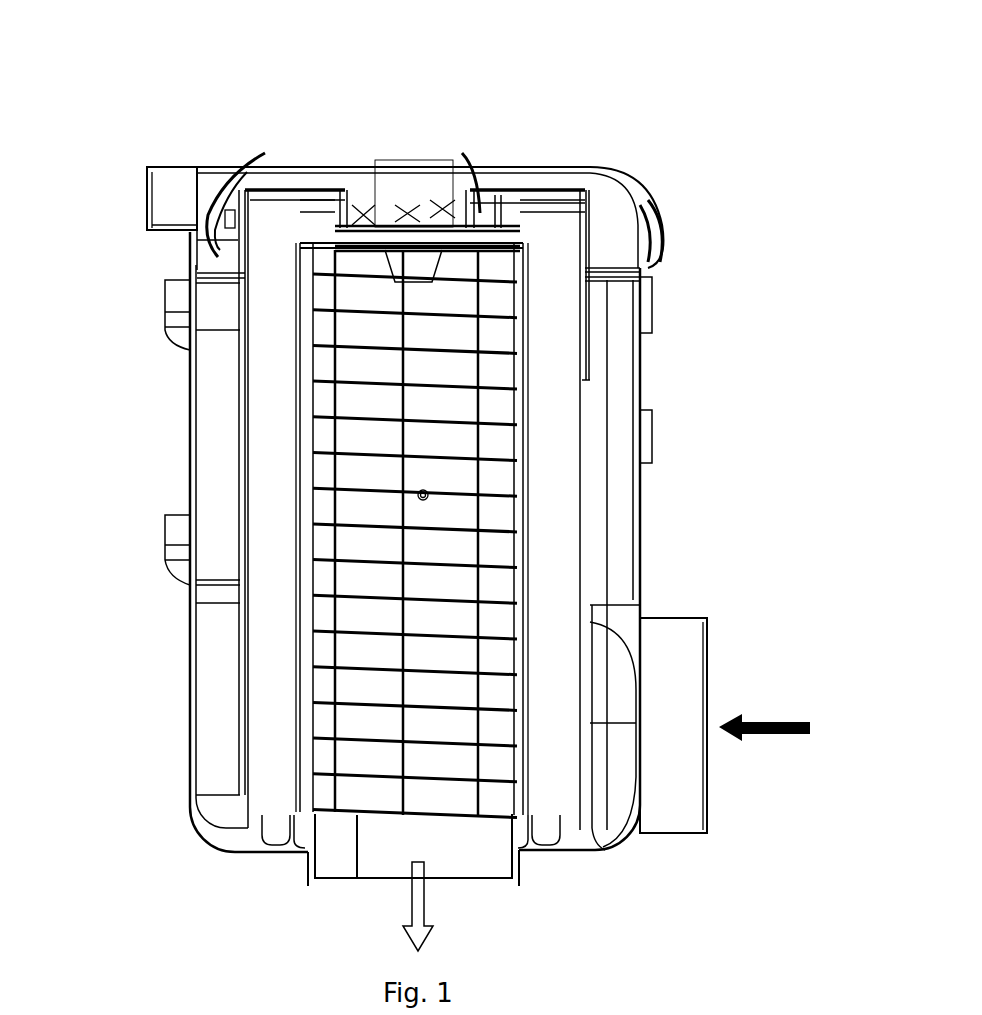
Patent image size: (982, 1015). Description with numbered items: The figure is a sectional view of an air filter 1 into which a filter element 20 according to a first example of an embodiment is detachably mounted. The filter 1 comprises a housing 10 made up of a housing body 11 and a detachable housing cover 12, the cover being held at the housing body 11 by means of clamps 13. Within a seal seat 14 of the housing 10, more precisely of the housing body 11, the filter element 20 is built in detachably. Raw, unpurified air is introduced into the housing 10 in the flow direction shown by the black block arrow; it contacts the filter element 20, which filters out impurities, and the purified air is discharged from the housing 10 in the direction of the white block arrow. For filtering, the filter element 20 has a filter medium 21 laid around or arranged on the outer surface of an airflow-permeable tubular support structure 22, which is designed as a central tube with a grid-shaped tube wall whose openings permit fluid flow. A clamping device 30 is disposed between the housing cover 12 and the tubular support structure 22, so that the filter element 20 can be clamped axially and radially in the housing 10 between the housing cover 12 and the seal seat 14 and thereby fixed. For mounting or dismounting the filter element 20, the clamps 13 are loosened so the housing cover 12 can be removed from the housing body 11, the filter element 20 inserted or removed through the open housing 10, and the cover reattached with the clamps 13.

The filter 1 is at (246, 66).
The housing 10 is at (122, 152).
The housing body 11 is at (184, 472).
The housing cover 12 is at (328, 164).
The clamps 13 is at (247, 166).
The seal seat 14 is at (280, 855).
The filter element 20 is at (597, 425).
The filter medium 21 is at (567, 492).
The tubular support structure 22 is at (447, 812).
The clamping device 30 is at (403, 198).